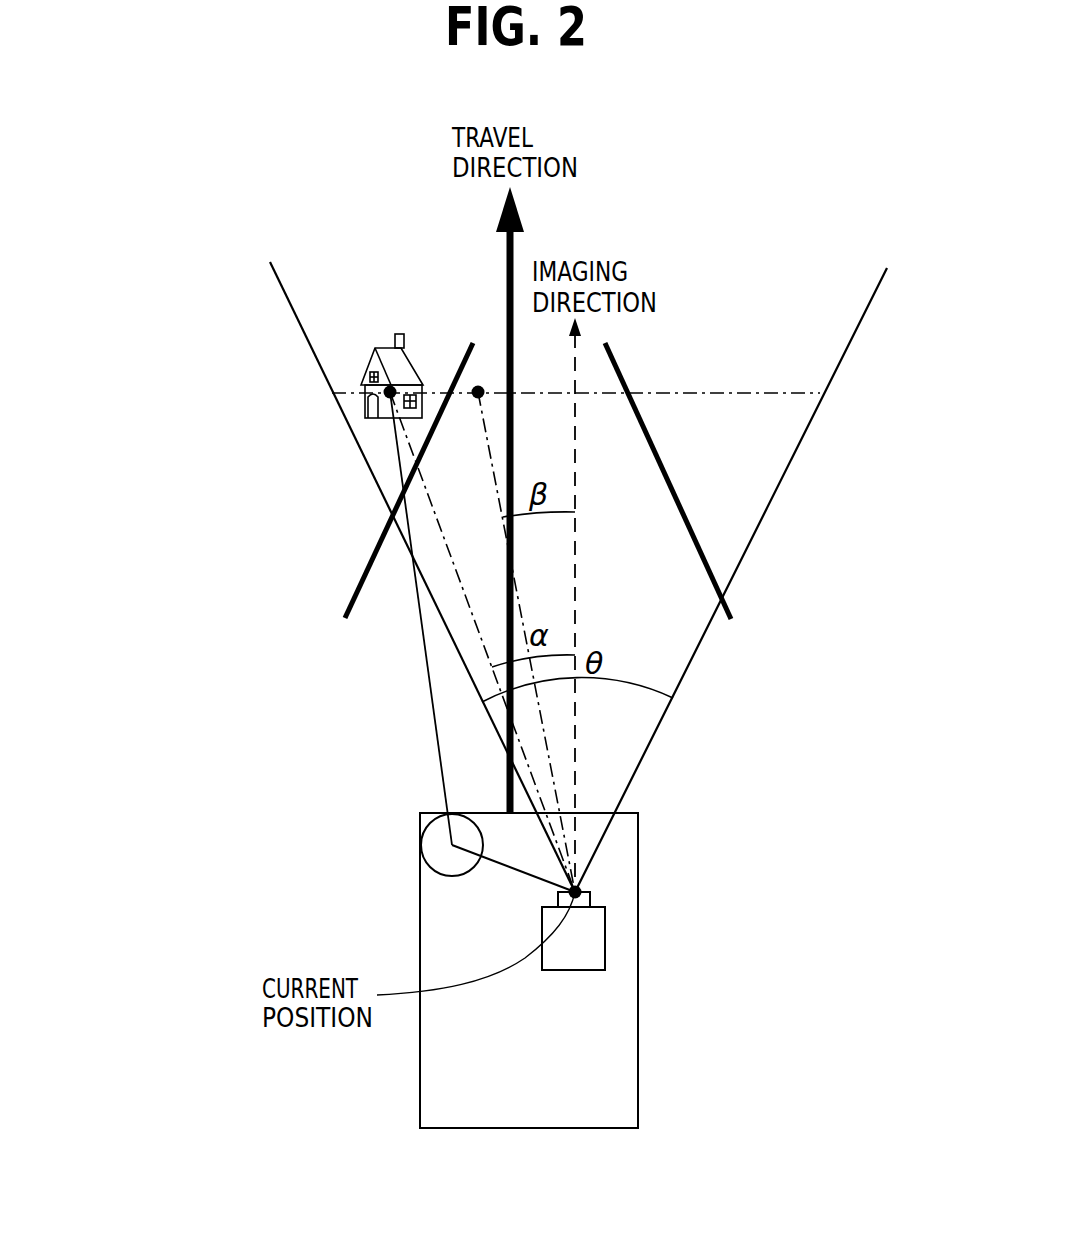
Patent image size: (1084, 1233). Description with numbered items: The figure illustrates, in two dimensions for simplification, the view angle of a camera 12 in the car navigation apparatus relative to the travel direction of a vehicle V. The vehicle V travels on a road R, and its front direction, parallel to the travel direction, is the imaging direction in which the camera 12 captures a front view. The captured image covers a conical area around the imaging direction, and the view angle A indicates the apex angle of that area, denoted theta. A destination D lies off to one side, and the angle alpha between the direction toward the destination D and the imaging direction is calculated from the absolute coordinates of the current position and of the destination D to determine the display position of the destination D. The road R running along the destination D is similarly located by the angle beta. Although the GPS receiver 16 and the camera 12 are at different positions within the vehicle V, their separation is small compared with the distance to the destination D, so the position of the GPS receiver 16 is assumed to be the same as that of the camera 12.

The camera 12 is at (605, 935).
The GPS receiver 16 is at (445, 878).
The destination D is at (365, 357).
The road R is at (665, 472).
The view angle A is at (735, 573).
The vehicle V is at (638, 1005).